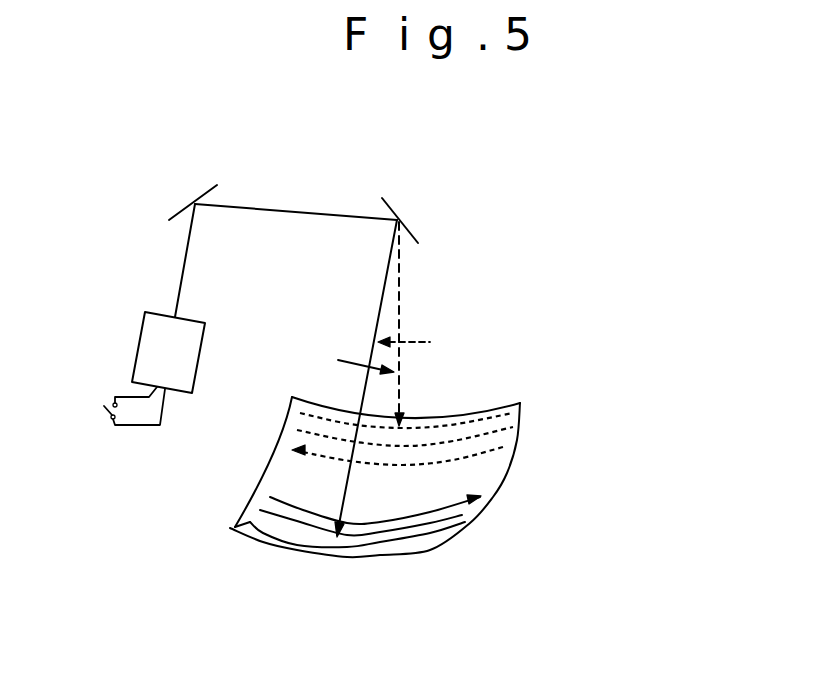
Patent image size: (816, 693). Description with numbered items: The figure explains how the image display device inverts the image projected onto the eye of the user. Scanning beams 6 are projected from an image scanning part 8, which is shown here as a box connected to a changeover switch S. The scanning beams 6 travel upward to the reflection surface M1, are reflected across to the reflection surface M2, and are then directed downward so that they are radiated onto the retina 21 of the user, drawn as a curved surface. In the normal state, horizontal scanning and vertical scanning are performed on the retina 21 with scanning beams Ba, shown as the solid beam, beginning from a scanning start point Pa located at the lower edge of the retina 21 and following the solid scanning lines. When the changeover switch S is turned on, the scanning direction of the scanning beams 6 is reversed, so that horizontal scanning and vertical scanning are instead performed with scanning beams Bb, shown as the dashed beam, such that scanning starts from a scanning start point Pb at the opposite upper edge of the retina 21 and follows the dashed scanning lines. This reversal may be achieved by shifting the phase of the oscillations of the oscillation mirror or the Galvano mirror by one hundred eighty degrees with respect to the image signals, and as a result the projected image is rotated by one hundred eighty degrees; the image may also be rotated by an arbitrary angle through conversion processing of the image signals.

The reflection surface M1 is at (180, 212).
The scanning beams 6 is at (277, 210).
The reflection surface M2 is at (418, 243).
The image scanning part 8 is at (140, 330).
The changeover switch S is at (110, 417).
The scanning beams Ba is at (372, 351).
The scanning beams Bb is at (400, 323).
The scanning start point Pb is at (515, 410).
The retina 21 is at (493, 495).
The scanning start point Pa is at (238, 536).